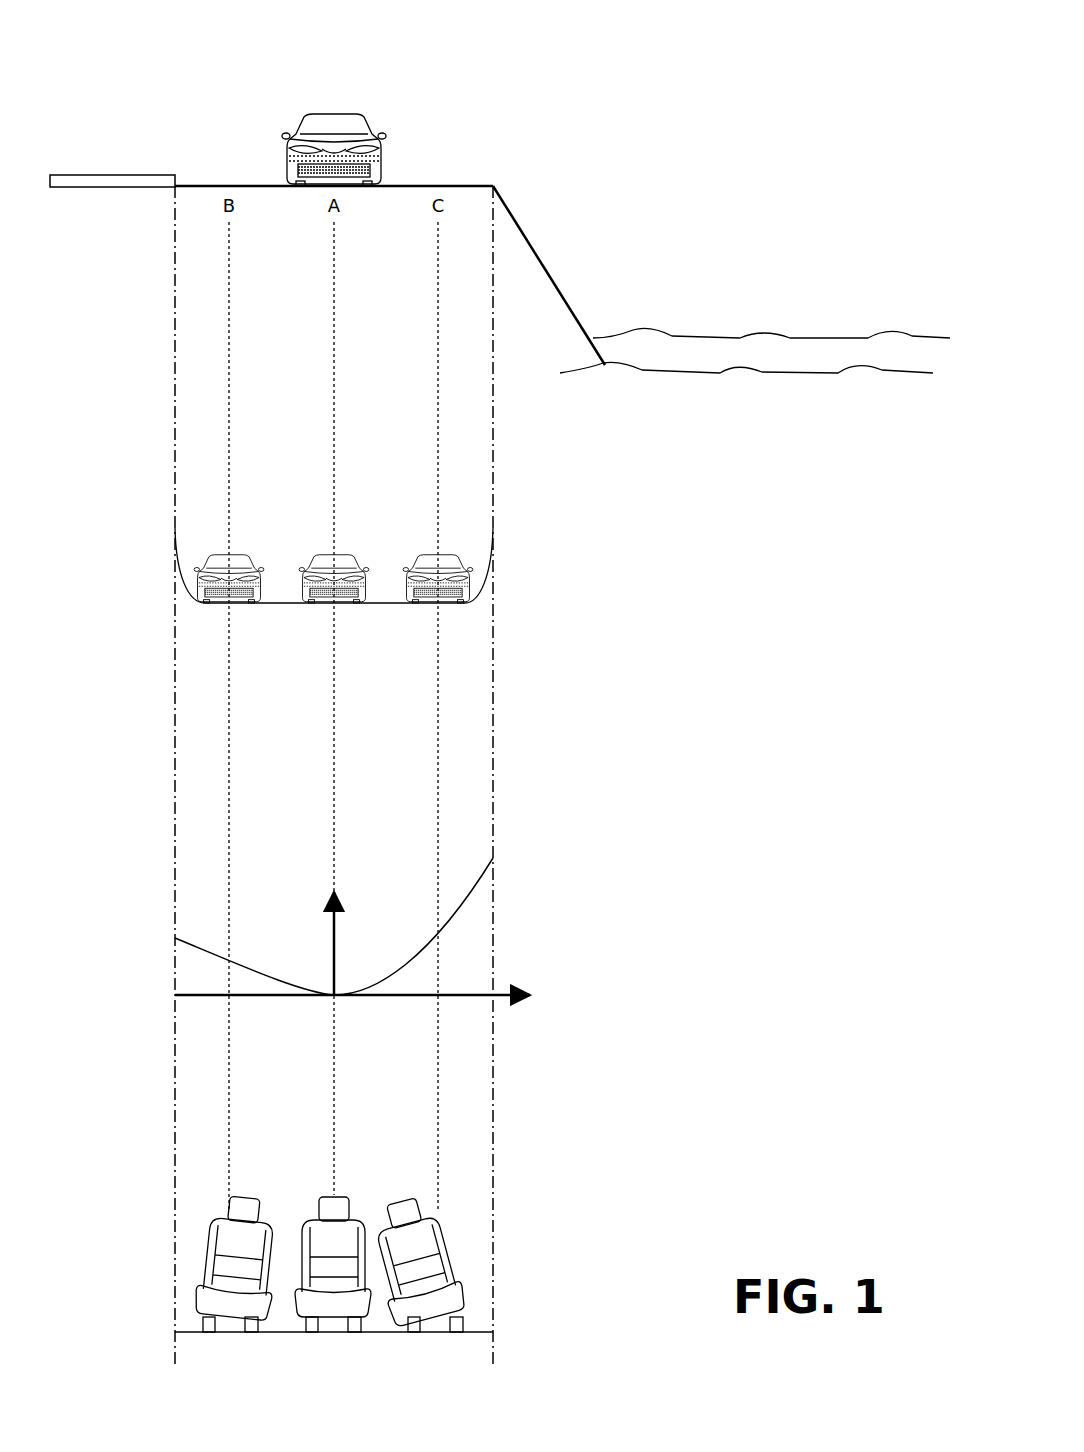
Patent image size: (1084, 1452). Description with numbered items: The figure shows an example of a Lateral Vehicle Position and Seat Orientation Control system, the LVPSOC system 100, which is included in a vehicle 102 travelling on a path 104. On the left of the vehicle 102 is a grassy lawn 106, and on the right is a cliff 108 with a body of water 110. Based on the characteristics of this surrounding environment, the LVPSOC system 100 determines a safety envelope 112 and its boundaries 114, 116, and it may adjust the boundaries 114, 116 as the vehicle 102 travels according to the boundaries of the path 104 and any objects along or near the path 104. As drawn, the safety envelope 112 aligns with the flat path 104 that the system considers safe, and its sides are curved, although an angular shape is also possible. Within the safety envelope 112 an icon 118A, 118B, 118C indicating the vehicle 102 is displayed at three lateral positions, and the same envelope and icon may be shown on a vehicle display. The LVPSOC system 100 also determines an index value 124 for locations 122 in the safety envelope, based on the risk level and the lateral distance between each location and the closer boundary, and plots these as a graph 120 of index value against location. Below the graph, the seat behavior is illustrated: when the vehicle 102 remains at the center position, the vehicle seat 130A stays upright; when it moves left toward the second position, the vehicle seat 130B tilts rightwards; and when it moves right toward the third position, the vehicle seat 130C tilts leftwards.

The LVPSOC system 100 is at (746, 78).
The vehicle 102 is at (338, 115).
The path 104 is at (418, 185).
The grassy lawn 106 is at (142, 175).
The cliff 108 is at (545, 265).
The body of water 110 is at (758, 361).
The safety envelope 112 is at (334, 470).
The boundary of the safety envelope 114 is at (177, 572).
The boundary of the safety envelope 116 is at (480, 578).
The icon 118A is at (340, 553).
The icon 118B is at (238, 553).
The icon 118C is at (442, 553).
The graph 120 is at (402, 926).
The locations 122 is at (442, 1000).
The index value 124 is at (330, 948).
The vehicle seat 130A is at (340, 1207).
The vehicle seat 130B is at (215, 1238).
The vehicle seat 130C is at (447, 1237).